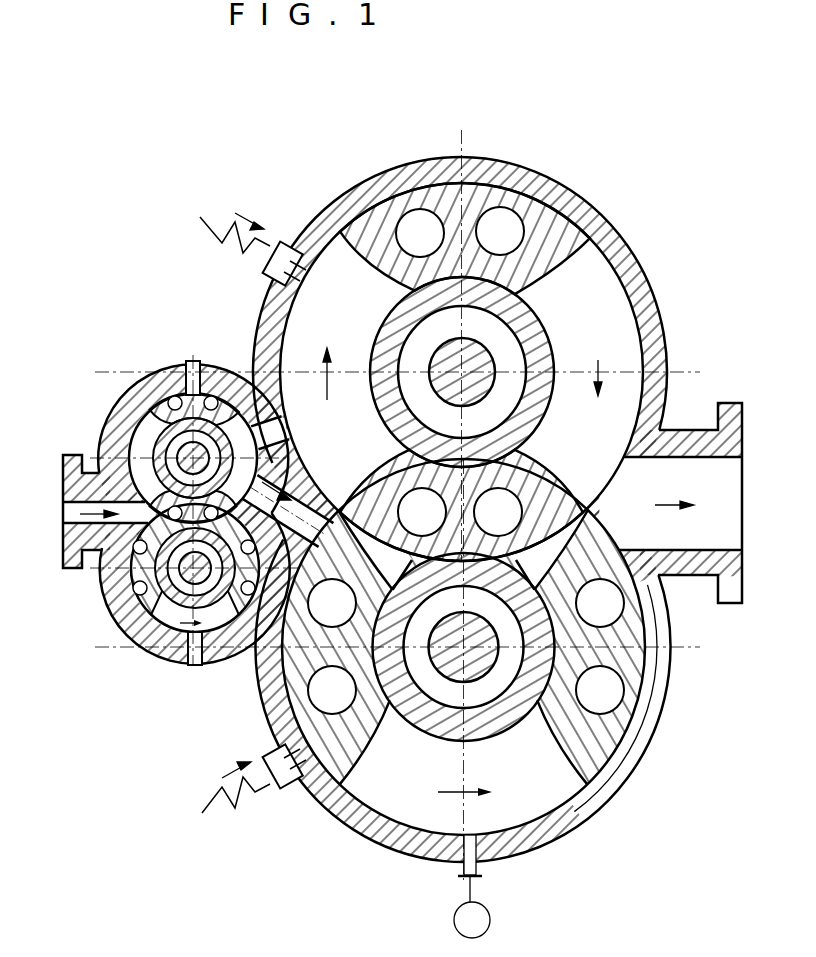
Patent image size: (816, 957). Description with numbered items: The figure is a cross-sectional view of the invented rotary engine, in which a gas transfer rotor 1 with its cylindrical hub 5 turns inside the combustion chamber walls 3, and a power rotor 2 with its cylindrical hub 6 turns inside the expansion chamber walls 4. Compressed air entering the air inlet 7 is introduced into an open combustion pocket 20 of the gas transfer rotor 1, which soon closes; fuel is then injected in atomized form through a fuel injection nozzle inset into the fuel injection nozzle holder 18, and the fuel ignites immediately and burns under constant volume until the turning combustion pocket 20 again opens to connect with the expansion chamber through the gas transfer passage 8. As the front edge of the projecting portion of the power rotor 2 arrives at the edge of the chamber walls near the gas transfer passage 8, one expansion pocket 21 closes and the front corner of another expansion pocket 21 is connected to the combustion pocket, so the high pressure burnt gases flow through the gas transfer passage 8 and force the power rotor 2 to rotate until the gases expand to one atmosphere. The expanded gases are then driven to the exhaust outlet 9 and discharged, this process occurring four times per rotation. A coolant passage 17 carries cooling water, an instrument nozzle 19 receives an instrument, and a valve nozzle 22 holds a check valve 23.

The gas transfer rotor 1 is at (173, 527).
The power rotor 2 is at (418, 157).
The combustion chamber walls 3 is at (150, 652).
The expansion chamber walls 4 is at (463, 707).
The cylindrical hub of gas transfer rotor 5 is at (240, 362).
The cylindrical hub of power rotor 6 is at (524, 357).
The air inlet 7 is at (60, 540).
The gas transfer passage 8 is at (256, 640).
The exhaust outlet 9 is at (736, 515).
The coolant passage 17 is at (623, 243).
The fuel injection nozzle holder 18 is at (195, 668).
The instrument nozzle 19 is at (478, 880).
The combustion pocket 20 is at (142, 392).
The expansion pocket 21 is at (527, 777).
The valve nozzle 22 is at (281, 790).
The check valve 23 is at (238, 805).